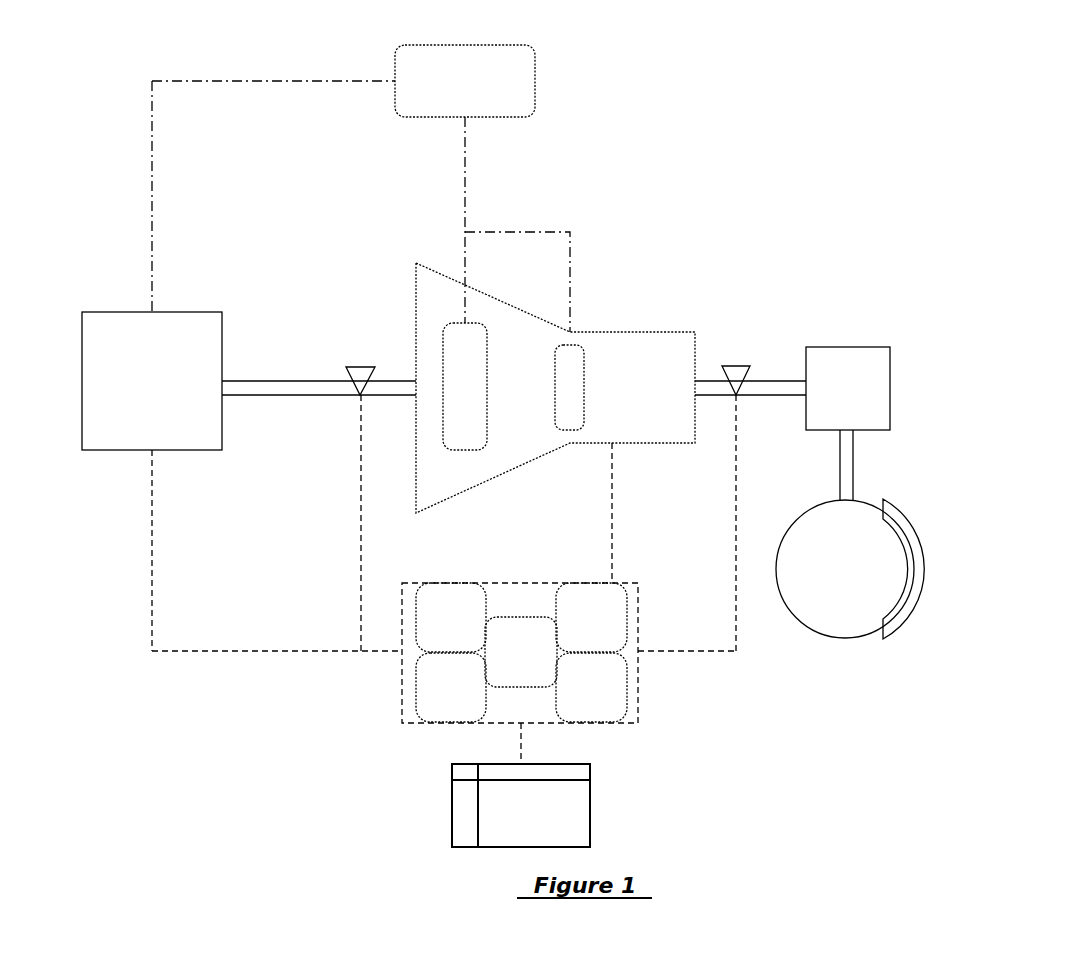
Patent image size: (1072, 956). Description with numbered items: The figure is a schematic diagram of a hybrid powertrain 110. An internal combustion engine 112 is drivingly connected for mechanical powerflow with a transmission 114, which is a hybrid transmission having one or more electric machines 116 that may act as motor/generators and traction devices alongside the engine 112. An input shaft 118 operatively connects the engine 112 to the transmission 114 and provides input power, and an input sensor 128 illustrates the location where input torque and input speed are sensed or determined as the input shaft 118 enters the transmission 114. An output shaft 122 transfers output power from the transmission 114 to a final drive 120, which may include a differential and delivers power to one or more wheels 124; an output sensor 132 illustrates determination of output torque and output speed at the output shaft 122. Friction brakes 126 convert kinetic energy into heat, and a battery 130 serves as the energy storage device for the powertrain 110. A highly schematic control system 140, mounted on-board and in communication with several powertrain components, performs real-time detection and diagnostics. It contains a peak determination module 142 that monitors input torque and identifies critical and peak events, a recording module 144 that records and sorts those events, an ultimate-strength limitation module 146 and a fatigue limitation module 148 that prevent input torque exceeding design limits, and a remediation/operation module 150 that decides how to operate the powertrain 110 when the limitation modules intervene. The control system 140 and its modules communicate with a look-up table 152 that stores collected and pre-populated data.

The powertrain 110 is at (850, 148).
The internal combustion engine 112 is at (131, 396).
The transmission 114 is at (378, 232).
The electric machines 116 is at (583, 387).
The input shaft 118 is at (263, 387).
The final drive 120 is at (827, 397).
The output shaft 122 is at (787, 388).
The wheels 124 is at (845, 569).
The friction brakes 126 is at (917, 588).
The input sensor 128 is at (360, 366).
The battery 130 is at (444, 96).
The output sensor 132 is at (736, 365).
The control system 140 is at (402, 693).
The peak determination module 142 is at (430, 634).
The recording module 144 is at (430, 702).
The ultimate-strength limitation module 146 is at (570, 634).
The fatigue limitation module 148 is at (570, 702).
The remediation/operation module 150 is at (500, 669).
The look-up table 152 is at (513, 829).